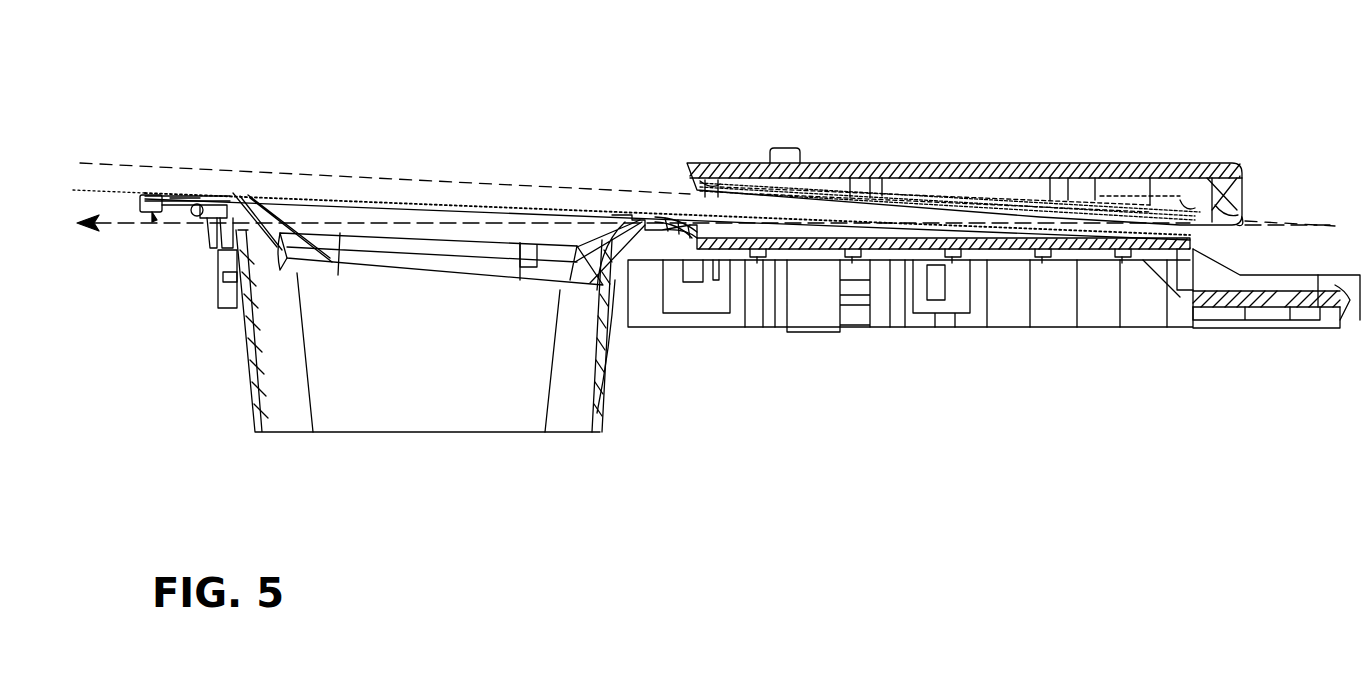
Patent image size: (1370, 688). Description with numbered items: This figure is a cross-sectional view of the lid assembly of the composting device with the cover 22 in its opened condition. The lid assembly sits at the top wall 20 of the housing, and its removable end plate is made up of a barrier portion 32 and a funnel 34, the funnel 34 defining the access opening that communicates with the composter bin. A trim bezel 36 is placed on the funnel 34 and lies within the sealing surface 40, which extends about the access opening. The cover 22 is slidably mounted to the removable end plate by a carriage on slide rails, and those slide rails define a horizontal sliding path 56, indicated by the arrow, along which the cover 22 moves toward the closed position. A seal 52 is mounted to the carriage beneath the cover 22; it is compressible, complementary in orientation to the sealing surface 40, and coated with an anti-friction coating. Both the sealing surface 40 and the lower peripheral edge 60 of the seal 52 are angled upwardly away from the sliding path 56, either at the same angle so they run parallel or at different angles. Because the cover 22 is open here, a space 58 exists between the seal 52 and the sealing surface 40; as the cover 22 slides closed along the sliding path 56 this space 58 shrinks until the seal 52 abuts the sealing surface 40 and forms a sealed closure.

The top wall 20 is at (990, 230).
The cover 22 is at (1075, 112).
The barrier portion 32 is at (1060, 253).
The funnel 34 is at (240, 313).
The trim bezel 36 is at (610, 290).
The sealing surface 40 is at (667, 224).
The seal 52 is at (1145, 210).
The sliding path 56 is at (133, 226).
The space 58 is at (795, 208).
The lower peripheral edge 60 is at (1247, 221).